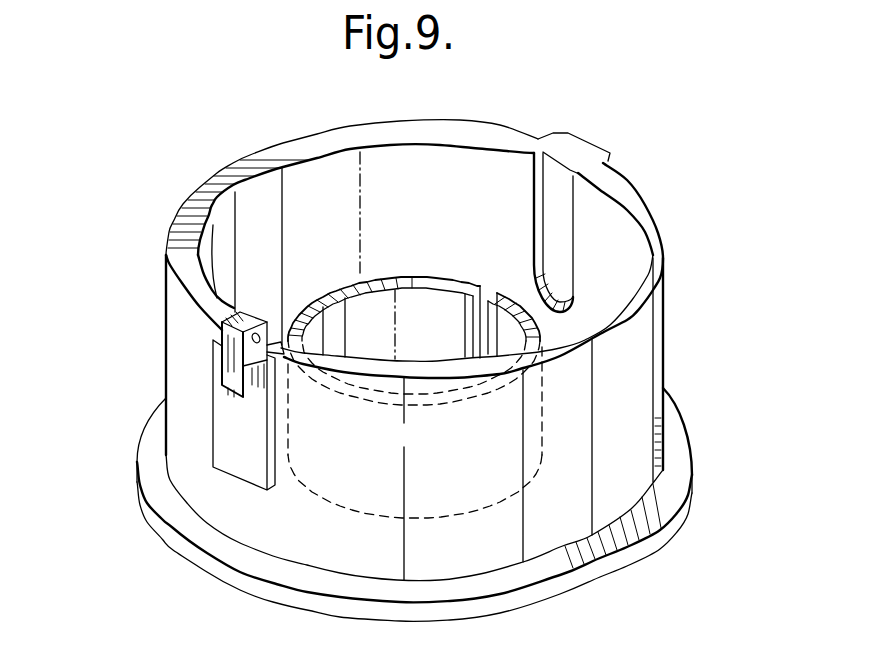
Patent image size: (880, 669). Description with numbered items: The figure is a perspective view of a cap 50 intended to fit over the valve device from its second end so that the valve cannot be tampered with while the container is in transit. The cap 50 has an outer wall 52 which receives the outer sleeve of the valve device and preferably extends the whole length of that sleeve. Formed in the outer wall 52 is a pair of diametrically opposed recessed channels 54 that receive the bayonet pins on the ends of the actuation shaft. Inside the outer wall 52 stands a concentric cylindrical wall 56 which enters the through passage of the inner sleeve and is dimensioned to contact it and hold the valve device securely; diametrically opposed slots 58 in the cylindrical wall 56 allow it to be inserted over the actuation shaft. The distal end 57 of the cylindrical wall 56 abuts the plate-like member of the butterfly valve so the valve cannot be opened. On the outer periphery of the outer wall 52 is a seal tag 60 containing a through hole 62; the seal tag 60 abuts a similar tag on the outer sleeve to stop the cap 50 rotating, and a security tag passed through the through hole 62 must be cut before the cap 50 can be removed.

The cap 50 is at (598, 127).
The outer wall 52 is at (607, 402).
The recessed channels 54 is at (560, 208).
The cylindrical wall 56 is at (408, 305).
The distal end 57 is at (441, 285).
The slots 58 is at (490, 334).
The seal tag 60 is at (250, 340).
The through hole 62 is at (222, 323).